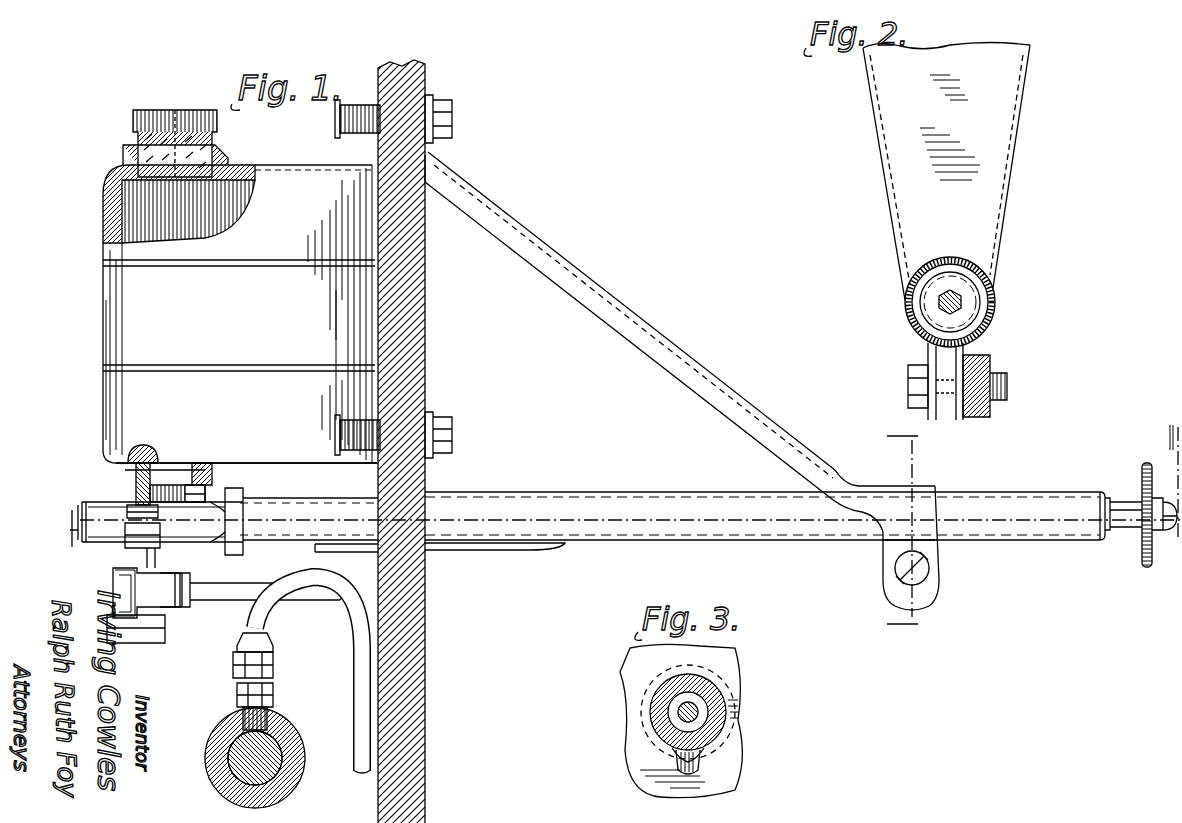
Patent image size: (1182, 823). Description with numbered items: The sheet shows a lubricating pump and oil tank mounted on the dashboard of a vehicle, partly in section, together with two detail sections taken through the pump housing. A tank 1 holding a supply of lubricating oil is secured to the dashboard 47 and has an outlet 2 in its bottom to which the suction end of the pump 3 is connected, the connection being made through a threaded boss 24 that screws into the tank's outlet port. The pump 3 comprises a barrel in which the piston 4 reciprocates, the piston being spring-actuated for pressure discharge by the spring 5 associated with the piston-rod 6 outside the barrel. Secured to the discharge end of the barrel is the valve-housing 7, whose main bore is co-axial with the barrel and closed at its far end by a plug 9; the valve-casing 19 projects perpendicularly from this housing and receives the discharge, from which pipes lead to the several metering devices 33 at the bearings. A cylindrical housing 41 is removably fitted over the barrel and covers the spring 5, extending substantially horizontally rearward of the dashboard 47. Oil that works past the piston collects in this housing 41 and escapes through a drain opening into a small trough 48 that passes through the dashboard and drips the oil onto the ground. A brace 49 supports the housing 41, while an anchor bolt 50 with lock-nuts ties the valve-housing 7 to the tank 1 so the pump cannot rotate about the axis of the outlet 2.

In FIG. 1, the tank 1 is at (97, 314).
In FIG. 1, the outlet 2 is at (200, 468).
In FIG. 1, the pump 3 is at (308, 505).
In FIG. 3, the pump 3 is at (725, 697).
In FIG. 1, the piston 4 is at (1165, 482).
In FIG. 2, the spring 5 is at (990, 285).
In FIG. 2, the piston-rod 6 is at (965, 303).
In FIG. 1, the valve-housing 7 is at (113, 547).
In FIG. 1, the plug 9 is at (80, 508).
In FIG. 1, the valve-casing 19 is at (133, 610).
In FIG. 1, the threaded boss 24 is at (208, 498).
In FIG. 1, the metering devices 33 is at (240, 697).
In FIG. 1, the cylindrical housing 41 is at (1114, 512).
In FIG. 2, the cylindrical housing 41 is at (925, 345).
In FIG. 3, the cylindrical housing 41 is at (728, 672).
In FIG. 1, the dashboard 47 is at (425, 238).
In FIG. 3, the dashboard 47 is at (622, 712).
In FIG. 1, the trough 48 is at (315, 548).
In FIG. 3, the trough 48 is at (698, 768).
In FIG. 1, the brace 49 is at (622, 310).
In FIG. 2, the brace 49 is at (880, 192).
In FIG. 1, the anchor bolt 50 is at (136, 478).